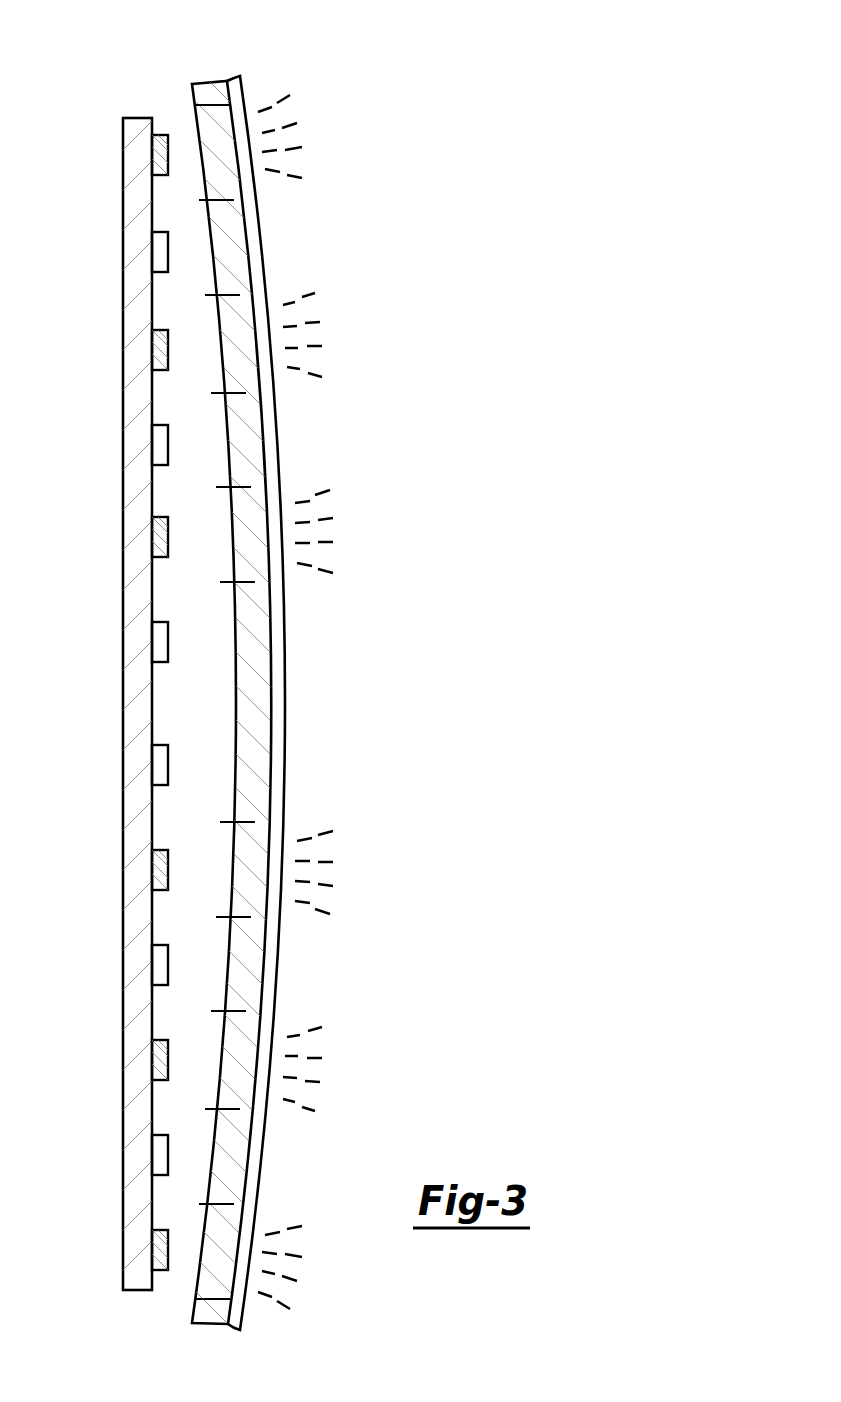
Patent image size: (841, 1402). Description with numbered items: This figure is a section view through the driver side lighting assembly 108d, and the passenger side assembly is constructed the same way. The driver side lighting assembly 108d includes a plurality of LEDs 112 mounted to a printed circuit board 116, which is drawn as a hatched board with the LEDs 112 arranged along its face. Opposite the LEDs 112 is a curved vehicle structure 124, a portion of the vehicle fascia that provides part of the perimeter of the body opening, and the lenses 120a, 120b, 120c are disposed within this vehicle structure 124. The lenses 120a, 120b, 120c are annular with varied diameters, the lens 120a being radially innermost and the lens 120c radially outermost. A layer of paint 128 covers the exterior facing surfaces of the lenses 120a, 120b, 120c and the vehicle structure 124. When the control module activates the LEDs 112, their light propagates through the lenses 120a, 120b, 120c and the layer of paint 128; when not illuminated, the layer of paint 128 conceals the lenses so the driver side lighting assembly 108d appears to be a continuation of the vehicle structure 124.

The driver side lighting assembly 108d is at (374, 58).
The printed circuit board 116 is at (123, 153).
The LEDs 112 is at (160, 180).
The vehicle structure 124 is at (250, 247).
The layer of paint 128 is at (278, 691).
The lens 120a is at (272, 553).
The lens 120b is at (260, 320).
The lens 120c is at (243, 162).